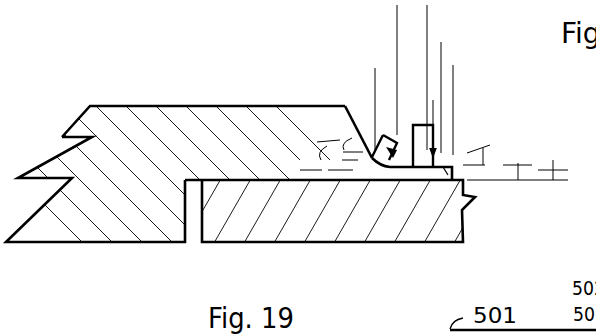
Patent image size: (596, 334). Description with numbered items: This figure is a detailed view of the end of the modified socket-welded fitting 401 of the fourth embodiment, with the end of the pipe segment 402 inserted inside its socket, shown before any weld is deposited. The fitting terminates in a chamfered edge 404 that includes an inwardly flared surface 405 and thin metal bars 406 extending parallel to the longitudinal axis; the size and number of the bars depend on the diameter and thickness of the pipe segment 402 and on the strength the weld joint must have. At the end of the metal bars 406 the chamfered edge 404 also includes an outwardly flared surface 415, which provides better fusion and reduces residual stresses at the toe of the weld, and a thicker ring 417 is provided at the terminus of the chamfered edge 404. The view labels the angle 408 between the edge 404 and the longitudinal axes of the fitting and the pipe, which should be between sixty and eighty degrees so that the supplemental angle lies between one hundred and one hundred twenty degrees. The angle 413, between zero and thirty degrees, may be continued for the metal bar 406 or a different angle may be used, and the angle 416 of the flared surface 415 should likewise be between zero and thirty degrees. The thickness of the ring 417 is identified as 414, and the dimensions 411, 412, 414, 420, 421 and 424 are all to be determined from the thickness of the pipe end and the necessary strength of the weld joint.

The modified socket-welded fitting 401 is at (105, 113).
The pipe segment 402 is at (243, 230).
The chamfered edge 404 is at (357, 122).
The inwardly flared surface 405 is at (398, 130).
The thin metal bars 406 is at (405, 172).
The angle 408 is at (345, 138).
The dimension 411 is at (375, 82).
The dimension 412 is at (553, 163).
The angle 413 is at (315, 160).
The thickness of ring 414 is at (518, 183).
The outwardly flared surface 415 is at (413, 167).
The angle of the flared surface 416 is at (485, 157).
The thicker ring 417 is at (446, 170).
The dimension 420 is at (401, 22).
The dimension 421 is at (427, 49).
The dimension 424 is at (441, 75).